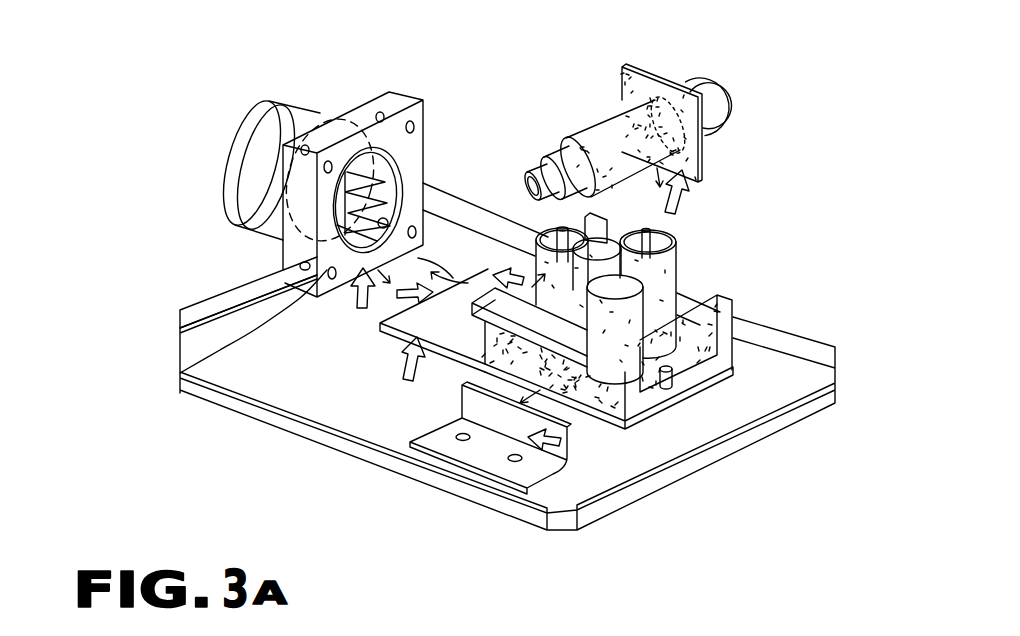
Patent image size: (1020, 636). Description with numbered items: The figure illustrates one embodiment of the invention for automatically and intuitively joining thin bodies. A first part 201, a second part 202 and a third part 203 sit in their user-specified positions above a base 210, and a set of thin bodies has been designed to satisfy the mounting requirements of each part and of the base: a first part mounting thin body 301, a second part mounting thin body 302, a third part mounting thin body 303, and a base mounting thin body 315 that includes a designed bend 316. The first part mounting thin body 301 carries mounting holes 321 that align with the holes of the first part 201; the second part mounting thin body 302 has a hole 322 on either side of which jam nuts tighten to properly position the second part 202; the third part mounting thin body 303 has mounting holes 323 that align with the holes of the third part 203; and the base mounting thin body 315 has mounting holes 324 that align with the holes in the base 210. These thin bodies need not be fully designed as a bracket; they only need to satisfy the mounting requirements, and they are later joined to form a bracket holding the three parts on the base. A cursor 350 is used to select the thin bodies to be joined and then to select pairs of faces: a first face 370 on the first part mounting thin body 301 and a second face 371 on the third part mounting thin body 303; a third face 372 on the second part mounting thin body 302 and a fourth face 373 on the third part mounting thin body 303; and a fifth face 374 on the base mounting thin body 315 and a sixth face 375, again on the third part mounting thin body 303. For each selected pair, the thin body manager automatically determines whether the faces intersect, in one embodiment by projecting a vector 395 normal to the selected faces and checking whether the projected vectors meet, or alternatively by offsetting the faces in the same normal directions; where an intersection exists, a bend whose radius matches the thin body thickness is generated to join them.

The first part 201 is at (293, 108).
The first part mounting thin body 301 is at (418, 100).
The mounting holes 321 is at (413, 228).
The second face 371 is at (490, 274).
The fourth face 373 is at (492, 272).
The cursor 350 is at (492, 270).
The vector 395 is at (303, 264).
The first face 370 is at (180, 373).
The sixth face 375 is at (423, 355).
The base mounting thin body 315 is at (437, 440).
The fifth face 374 is at (500, 400).
The mounting holes 324 is at (512, 462).
The designed bend 316 is at (540, 447).
The mounting holes 323 is at (666, 388).
The third part mounting thin body 303 is at (710, 380).
The third part 203 is at (712, 298).
The base 210 is at (803, 335).
The second part mounting thin body 302 is at (652, 72).
The second part 202 is at (717, 88).
The hole 322 is at (712, 132).
The third face 372 is at (695, 198).